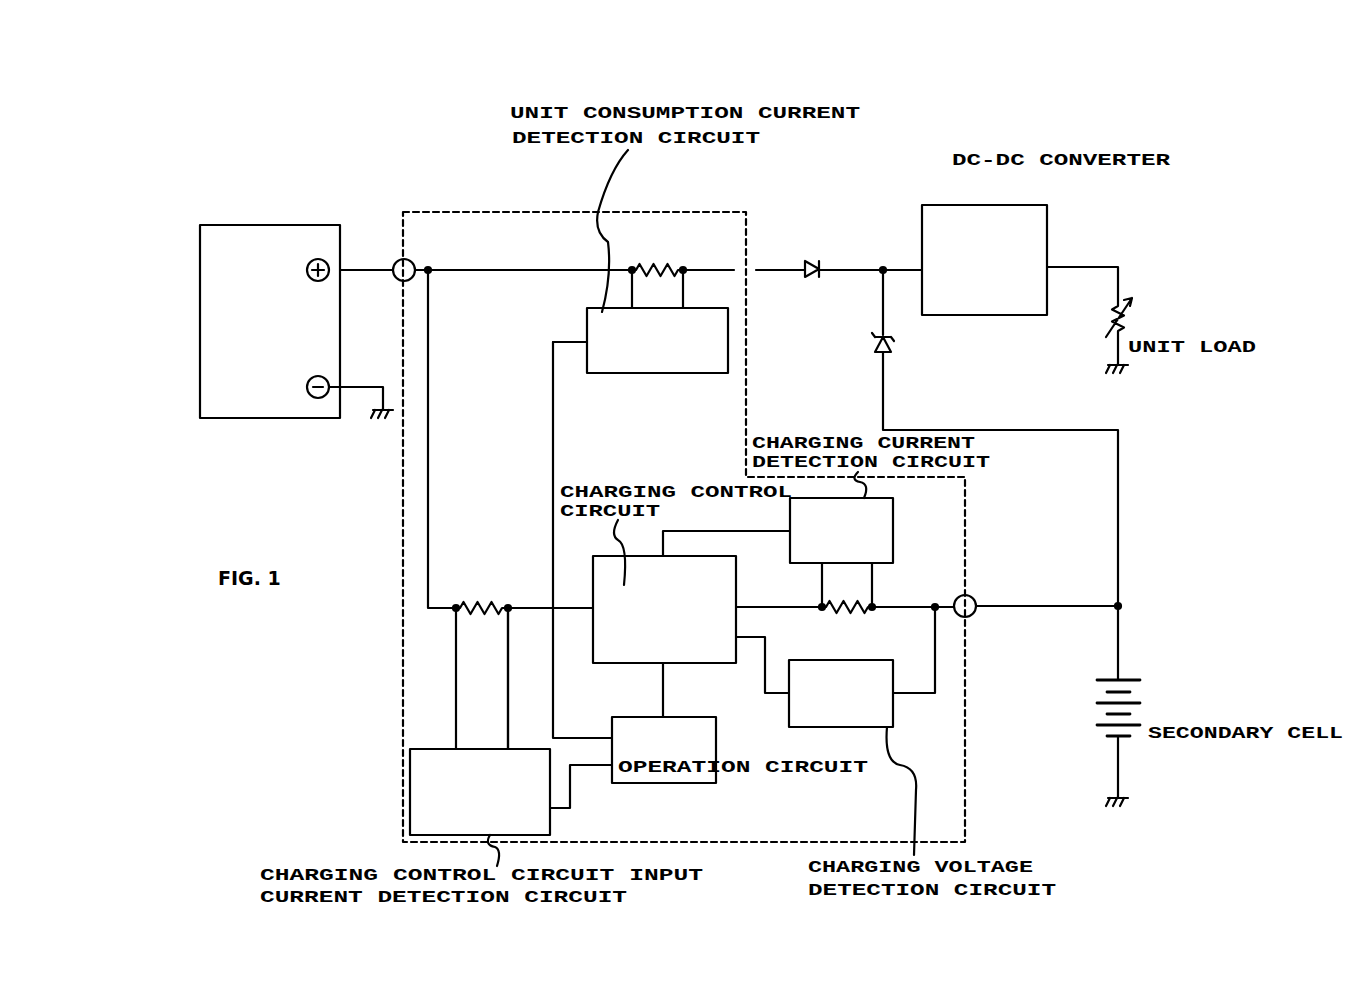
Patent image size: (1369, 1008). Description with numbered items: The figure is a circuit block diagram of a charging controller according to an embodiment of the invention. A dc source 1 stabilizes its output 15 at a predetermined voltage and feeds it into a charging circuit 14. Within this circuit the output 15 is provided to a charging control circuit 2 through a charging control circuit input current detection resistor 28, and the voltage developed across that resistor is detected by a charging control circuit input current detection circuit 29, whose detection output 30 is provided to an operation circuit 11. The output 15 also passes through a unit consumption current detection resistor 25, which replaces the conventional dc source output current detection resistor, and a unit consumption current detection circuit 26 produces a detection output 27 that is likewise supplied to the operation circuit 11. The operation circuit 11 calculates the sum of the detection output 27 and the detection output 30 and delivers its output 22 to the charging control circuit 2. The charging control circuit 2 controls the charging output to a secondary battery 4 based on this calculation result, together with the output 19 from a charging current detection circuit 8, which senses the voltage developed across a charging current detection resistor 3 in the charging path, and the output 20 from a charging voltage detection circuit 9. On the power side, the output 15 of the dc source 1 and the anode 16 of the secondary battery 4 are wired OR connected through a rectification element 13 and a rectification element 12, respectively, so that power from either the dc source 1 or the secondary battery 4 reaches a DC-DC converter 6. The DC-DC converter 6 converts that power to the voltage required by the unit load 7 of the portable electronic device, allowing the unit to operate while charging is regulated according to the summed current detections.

The dc source 1 is at (300, 225).
The output 15 is at (343, 270).
The charging circuit 14 is at (540, 212).
The unit consumption current detection resistor 25 is at (662, 268).
The unit consumption current detection circuit 26 is at (708, 373).
The rectification element 13 is at (812, 278).
The DC-DC converter 6 is at (1010, 205).
The unit load 7 is at (1134, 300).
The rectification element 12 is at (886, 355).
The charging control circuit 2 is at (737, 585).
The output 19 is at (732, 528).
The charging current detection circuit 8 is at (893, 532).
The charging current detection resistor 3 is at (846, 612).
The anode 16 is at (1022, 605).
The output 20 is at (768, 645).
The charging voltage detection circuit 9 is at (882, 660).
The operation circuit 11 is at (700, 716).
The output 22 is at (640, 690).
The detection output 27 is at (554, 702).
The charging control circuit input current detection resistor 28 is at (490, 600).
The charging control circuit input current detection circuit 29 is at (528, 748).
The detection output 30 is at (597, 768).
The secondary battery 4 is at (1143, 688).